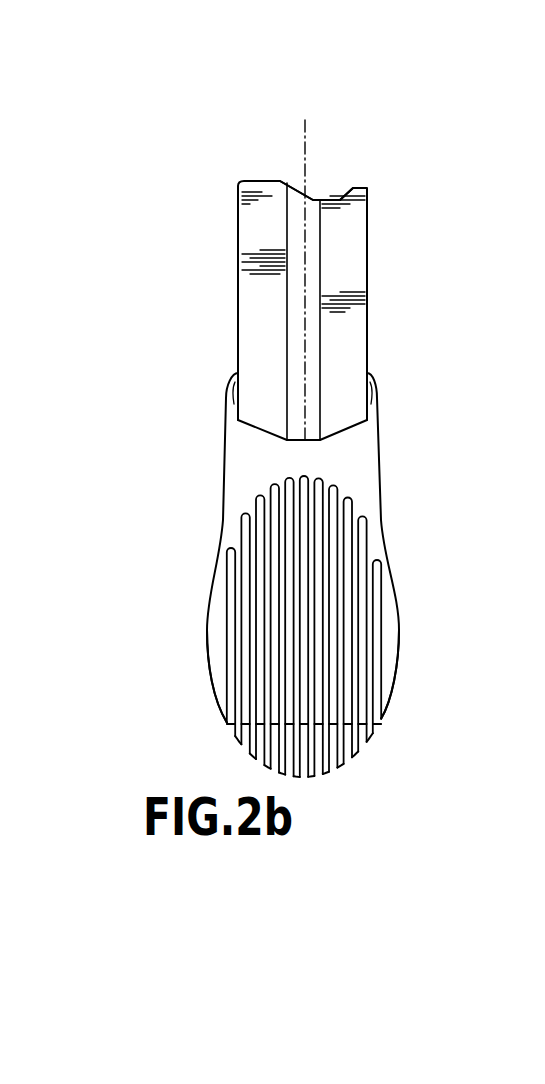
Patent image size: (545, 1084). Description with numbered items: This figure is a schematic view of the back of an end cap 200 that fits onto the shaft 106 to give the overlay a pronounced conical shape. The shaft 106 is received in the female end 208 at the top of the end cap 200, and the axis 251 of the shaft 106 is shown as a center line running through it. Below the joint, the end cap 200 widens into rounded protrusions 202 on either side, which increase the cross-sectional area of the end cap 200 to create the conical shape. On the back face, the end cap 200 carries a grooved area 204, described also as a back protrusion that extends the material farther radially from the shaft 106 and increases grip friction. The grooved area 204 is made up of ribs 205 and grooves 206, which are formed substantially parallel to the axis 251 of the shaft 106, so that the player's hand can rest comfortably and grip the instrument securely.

The shaft 106 is at (367, 283).
The axis 251 is at (305, 177).
The end cap 200 is at (372, 458).
The female end 208 is at (377, 396).
The grooved area 204 is at (372, 527).
The rounded protrusions 202 is at (208, 623).
The ribs 205 is at (330, 773).
The grooves 206 is at (355, 758).